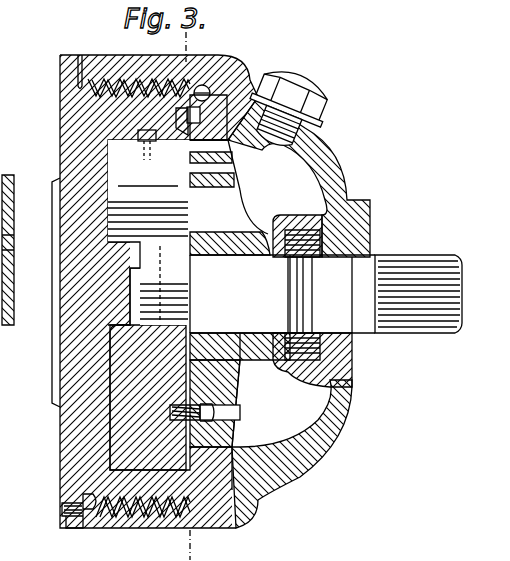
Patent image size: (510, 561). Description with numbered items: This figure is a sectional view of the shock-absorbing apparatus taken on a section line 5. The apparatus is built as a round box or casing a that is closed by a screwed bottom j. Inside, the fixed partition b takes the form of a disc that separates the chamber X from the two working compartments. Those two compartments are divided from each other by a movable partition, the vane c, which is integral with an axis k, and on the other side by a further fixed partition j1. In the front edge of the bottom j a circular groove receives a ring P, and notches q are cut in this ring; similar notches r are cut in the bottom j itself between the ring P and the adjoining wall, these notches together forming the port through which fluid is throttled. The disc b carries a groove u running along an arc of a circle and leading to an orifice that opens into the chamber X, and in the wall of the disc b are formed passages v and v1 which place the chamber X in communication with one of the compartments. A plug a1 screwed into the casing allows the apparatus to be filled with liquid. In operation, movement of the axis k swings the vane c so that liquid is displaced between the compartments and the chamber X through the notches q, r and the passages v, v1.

The ring P is at (183, 120).
The section line 5 is at (199, 294).
The round box or casing a is at (246, 66).
The groove u is at (205, 110).
The plug a1 is at (290, 95).
The screwed bottom j is at (78, 124).
The vane c is at (149, 232).
The notches q is at (147, 151).
The notches r is at (182, 138).
The passage v1 is at (226, 180).
The passage v is at (236, 212).
The chamber X is at (299, 293).
The axis k is at (326, 295).
The fixed partition b is at (228, 380).
The fixed partition j1 is at (142, 436).